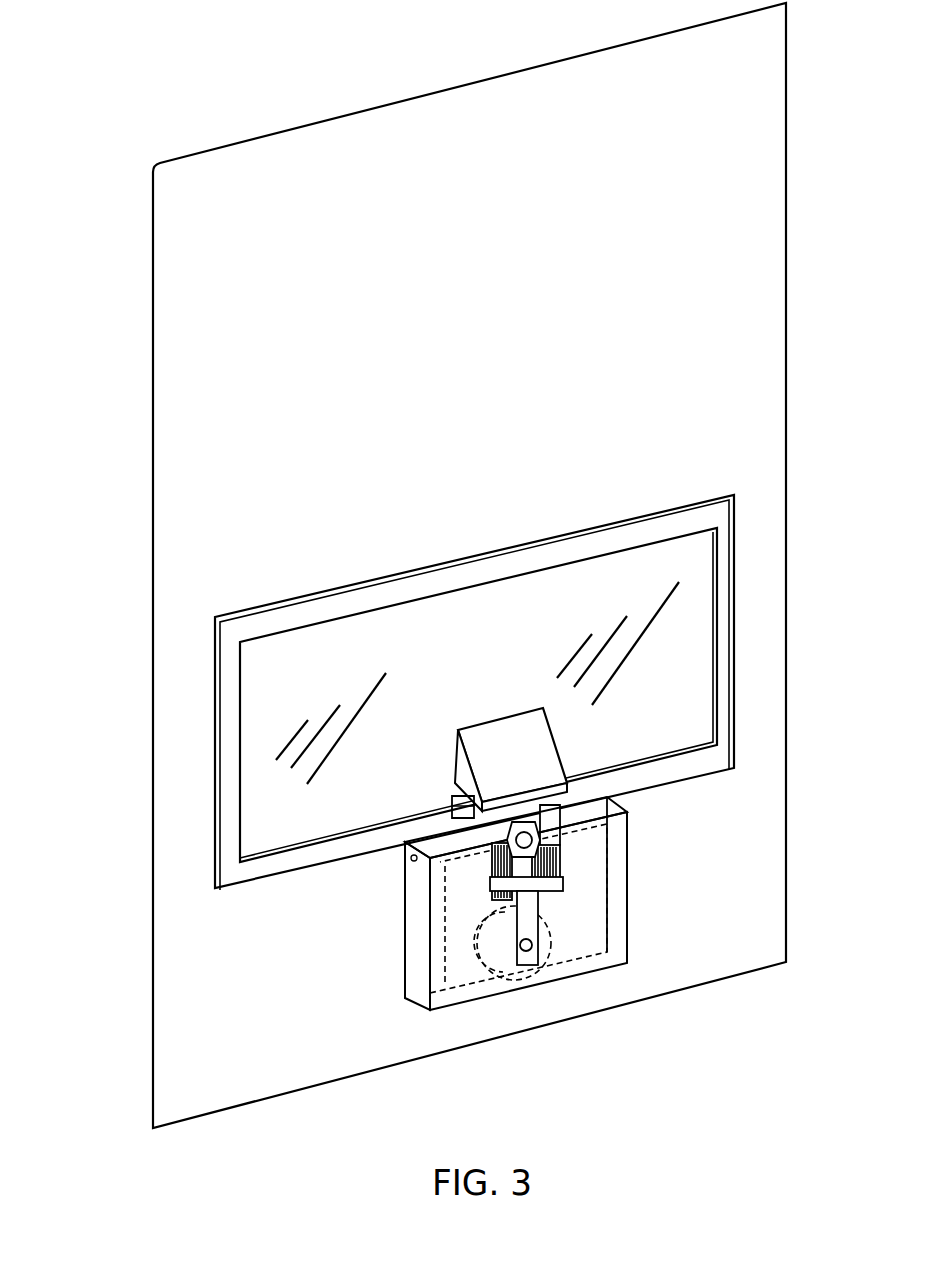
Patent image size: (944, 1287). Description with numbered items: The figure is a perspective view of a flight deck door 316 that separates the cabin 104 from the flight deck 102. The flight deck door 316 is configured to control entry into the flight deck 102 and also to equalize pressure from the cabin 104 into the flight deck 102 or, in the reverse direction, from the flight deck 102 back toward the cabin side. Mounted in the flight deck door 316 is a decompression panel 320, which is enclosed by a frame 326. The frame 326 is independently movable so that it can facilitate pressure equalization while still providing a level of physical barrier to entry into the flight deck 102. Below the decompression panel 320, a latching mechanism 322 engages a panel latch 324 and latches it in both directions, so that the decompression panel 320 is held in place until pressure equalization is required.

The flight deck door 316 is at (119, 75).
The cabin 104 is at (411, 53).
The flight deck 102 is at (655, 110).
The decompression panel 320 is at (561, 588).
The frame 326 is at (391, 592).
The panel latch 324 is at (505, 738).
The latching mechanism 322 is at (364, 929).